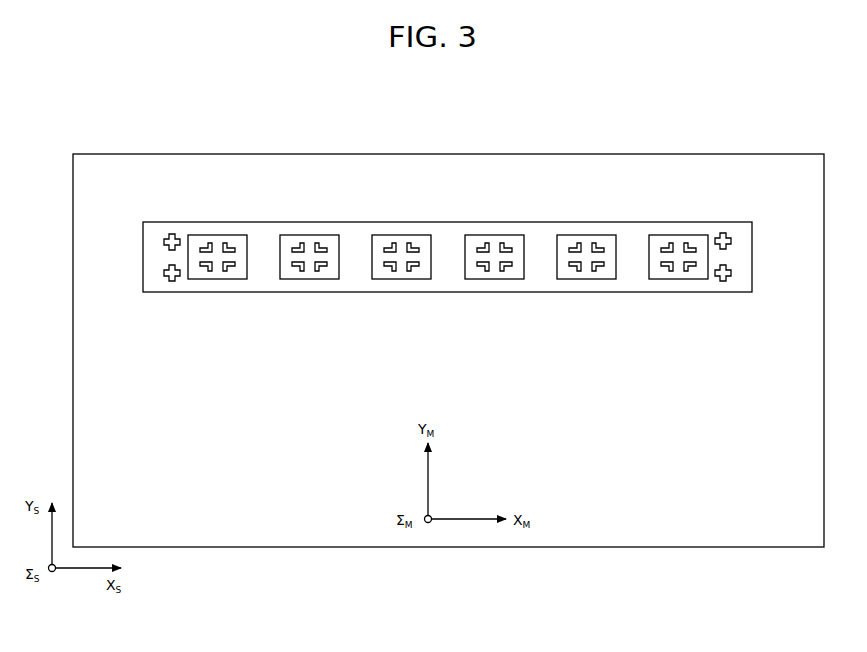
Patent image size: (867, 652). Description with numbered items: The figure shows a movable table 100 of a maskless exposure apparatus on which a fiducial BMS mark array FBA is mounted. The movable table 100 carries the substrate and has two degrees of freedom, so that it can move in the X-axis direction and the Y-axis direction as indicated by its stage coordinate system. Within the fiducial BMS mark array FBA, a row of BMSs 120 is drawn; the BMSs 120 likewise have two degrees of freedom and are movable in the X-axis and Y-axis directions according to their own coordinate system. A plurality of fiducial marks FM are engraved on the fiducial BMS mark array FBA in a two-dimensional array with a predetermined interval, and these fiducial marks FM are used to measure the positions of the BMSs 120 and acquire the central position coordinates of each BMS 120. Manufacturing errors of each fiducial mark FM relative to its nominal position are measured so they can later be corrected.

The movable table 100 is at (617, 154).
The BMSs 120 is at (593, 280).
The fiducial BMS mark array FBA is at (296, 222).
The fiducial mark FM is at (166, 236).